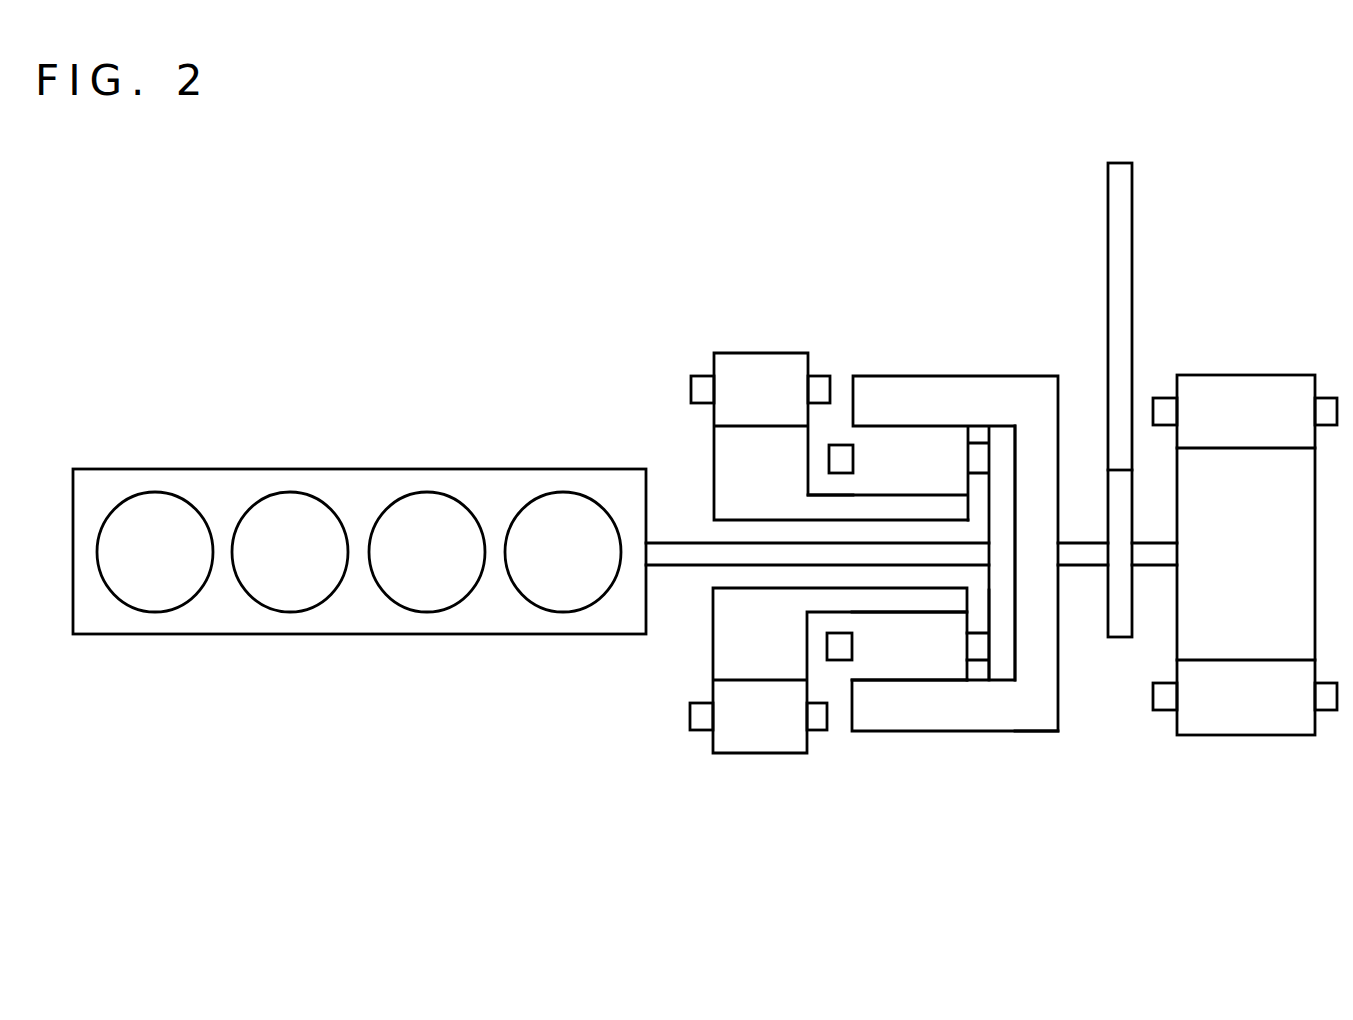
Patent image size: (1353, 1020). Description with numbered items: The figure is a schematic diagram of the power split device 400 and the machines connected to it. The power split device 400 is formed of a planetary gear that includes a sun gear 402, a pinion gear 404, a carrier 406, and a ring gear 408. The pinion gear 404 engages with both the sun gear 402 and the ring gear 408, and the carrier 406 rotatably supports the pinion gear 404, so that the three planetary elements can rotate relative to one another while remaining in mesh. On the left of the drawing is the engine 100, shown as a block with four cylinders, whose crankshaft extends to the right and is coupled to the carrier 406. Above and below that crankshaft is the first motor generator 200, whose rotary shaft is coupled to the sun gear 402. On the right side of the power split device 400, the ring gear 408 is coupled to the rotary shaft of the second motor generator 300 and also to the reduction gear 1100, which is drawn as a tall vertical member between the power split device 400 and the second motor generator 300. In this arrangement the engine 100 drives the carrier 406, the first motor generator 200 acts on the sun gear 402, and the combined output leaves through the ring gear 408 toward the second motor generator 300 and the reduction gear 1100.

The engine 100 is at (363, 469).
The MG (1) 200 is at (763, 353).
The MG (2) 300 is at (1245, 375).
The power split device 400 is at (939, 549).
The sun gear 402 is at (888, 612).
The pinion gear 404 is at (927, 680).
The carrier 406 is at (988, 592).
The ring gear 408 is at (1013, 731).
The reduction gear 1100 is at (1145, 138).